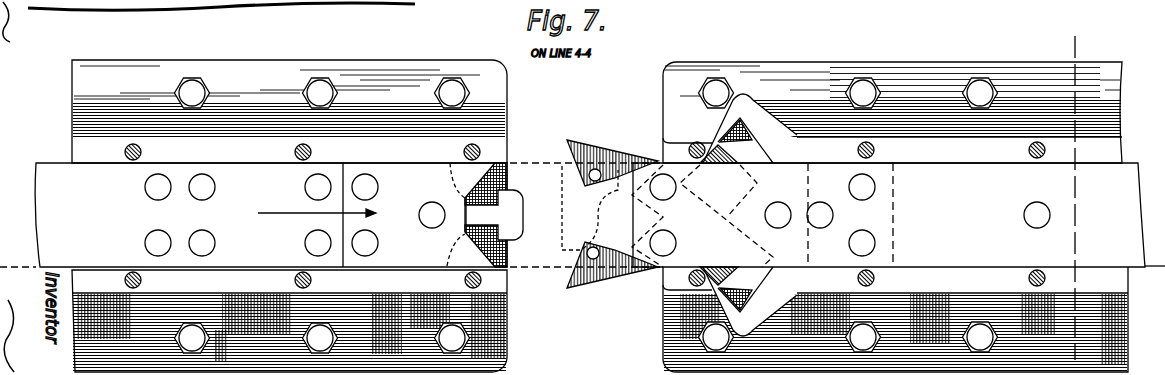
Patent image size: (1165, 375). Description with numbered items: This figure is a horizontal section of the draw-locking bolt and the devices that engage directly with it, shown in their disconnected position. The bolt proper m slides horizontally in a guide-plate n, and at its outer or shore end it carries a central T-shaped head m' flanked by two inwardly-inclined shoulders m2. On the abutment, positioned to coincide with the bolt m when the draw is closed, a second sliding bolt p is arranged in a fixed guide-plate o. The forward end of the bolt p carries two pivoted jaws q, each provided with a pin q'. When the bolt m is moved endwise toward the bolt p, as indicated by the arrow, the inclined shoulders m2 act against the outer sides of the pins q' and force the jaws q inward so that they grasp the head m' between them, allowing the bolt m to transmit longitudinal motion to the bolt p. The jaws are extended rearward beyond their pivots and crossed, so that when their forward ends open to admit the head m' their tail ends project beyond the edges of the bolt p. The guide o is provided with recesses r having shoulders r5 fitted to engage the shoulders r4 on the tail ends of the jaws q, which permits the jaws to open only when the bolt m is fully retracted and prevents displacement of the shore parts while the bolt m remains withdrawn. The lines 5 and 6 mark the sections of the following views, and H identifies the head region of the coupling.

The guide-plate n is at (289, 216).
The bolt m is at (271, 215).
The T-shaped head m' is at (494, 215).
The inwardly-inclined shoulders m2 is at (476, 250).
The fixed guide-plate o is at (895, 217).
The second sliding bolt p is at (888, 215).
The recesses r is at (722, 136).
The shoulders r4 is at (736, 215).
The shoulders r5 is at (740, 215).
The pivoted jaws q is at (612, 214).
The pin q' is at (593, 214).
The coupling head H is at (590, 172).
The section line 5 5 is at (1155, 259).
The section line 6 6 is at (1075, 190).